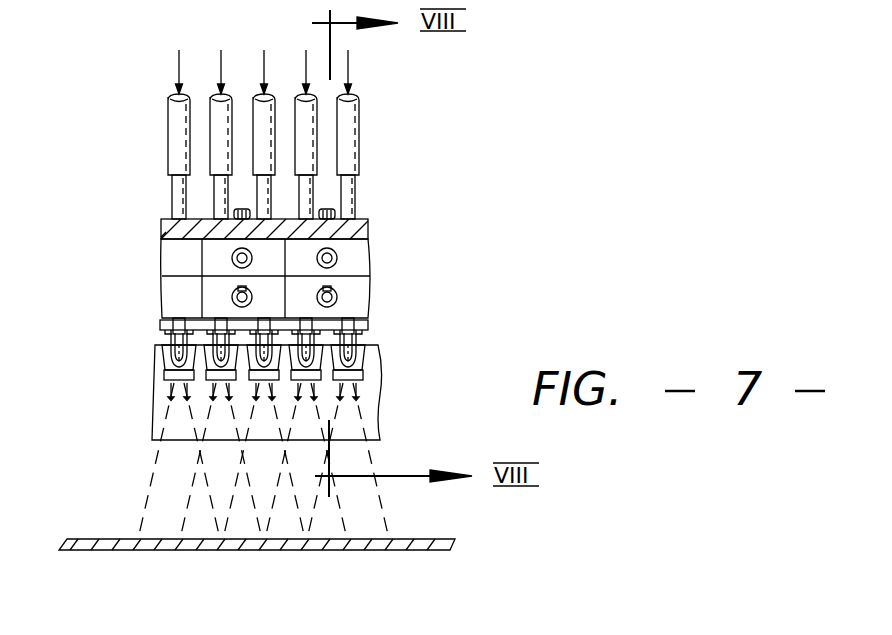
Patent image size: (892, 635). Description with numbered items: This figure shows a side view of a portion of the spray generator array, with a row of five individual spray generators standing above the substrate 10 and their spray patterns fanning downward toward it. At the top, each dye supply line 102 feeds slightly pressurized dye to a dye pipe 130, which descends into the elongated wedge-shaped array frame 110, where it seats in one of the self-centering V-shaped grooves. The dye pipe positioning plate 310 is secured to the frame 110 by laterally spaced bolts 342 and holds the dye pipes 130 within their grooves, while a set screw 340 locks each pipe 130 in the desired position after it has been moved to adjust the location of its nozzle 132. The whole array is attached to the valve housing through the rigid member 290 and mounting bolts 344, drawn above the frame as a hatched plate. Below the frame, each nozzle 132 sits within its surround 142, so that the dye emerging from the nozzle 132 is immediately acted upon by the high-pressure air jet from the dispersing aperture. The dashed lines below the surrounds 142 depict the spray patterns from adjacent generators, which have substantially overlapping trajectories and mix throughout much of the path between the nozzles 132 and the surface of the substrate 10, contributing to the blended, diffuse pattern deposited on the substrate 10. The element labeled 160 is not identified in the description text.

The substrate 10 is at (405, 539).
The dye supply line 102 is at (359, 135).
The array frame 110 is at (164, 330).
The dye pipe 130 is at (356, 185).
The nozzle 132 is at (360, 333).
The surround 142 is at (364, 364).
The shield plate 160 is at (378, 424).
The rigid member 290 is at (163, 224).
The dye pipe positioning plate 310 is at (357, 300).
The set screw 340 is at (337, 297).
The bolts 342 is at (337, 258).
The mounting bolts 344 is at (335, 210).